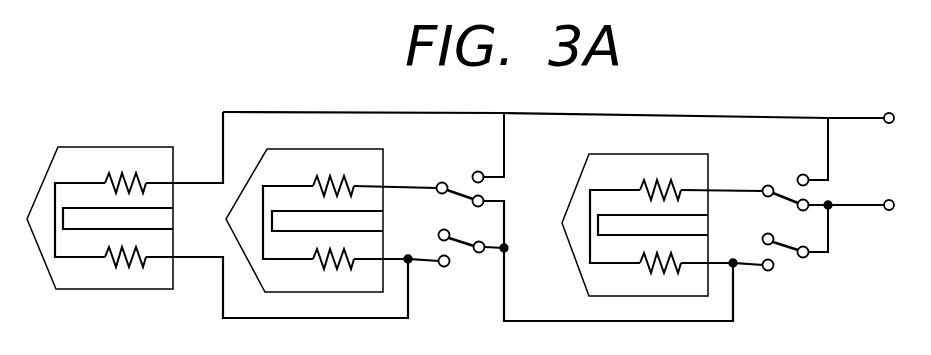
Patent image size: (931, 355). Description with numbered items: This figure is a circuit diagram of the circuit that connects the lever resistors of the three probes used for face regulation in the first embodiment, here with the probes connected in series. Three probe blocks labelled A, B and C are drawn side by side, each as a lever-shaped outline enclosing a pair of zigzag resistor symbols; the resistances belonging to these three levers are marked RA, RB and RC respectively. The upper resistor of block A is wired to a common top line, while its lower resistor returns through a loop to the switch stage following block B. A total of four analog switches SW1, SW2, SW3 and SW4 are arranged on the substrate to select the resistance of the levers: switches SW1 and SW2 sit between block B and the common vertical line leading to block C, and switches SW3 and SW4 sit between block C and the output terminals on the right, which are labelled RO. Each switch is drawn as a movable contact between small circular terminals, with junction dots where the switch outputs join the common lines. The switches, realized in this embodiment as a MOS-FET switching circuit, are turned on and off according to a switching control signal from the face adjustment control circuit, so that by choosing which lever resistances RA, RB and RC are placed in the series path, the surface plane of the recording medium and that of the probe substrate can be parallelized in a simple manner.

The first strain gauge block A is at (124, 204).
The second strain gauge block B is at (331, 206).
The third strain gauge block C is at (662, 211).
The resistors of block A RA is at (163, 220).
The resistors of block B RB is at (366, 222).
The resistors of block C RC is at (693, 226).
The output resistance terminals RO is at (891, 161).
The analog switch SW1 is at (458, 174).
The analog switch SW2 is at (468, 264).
The analog switch SW3 is at (785, 179).
The analog switch SW4 is at (785, 271).